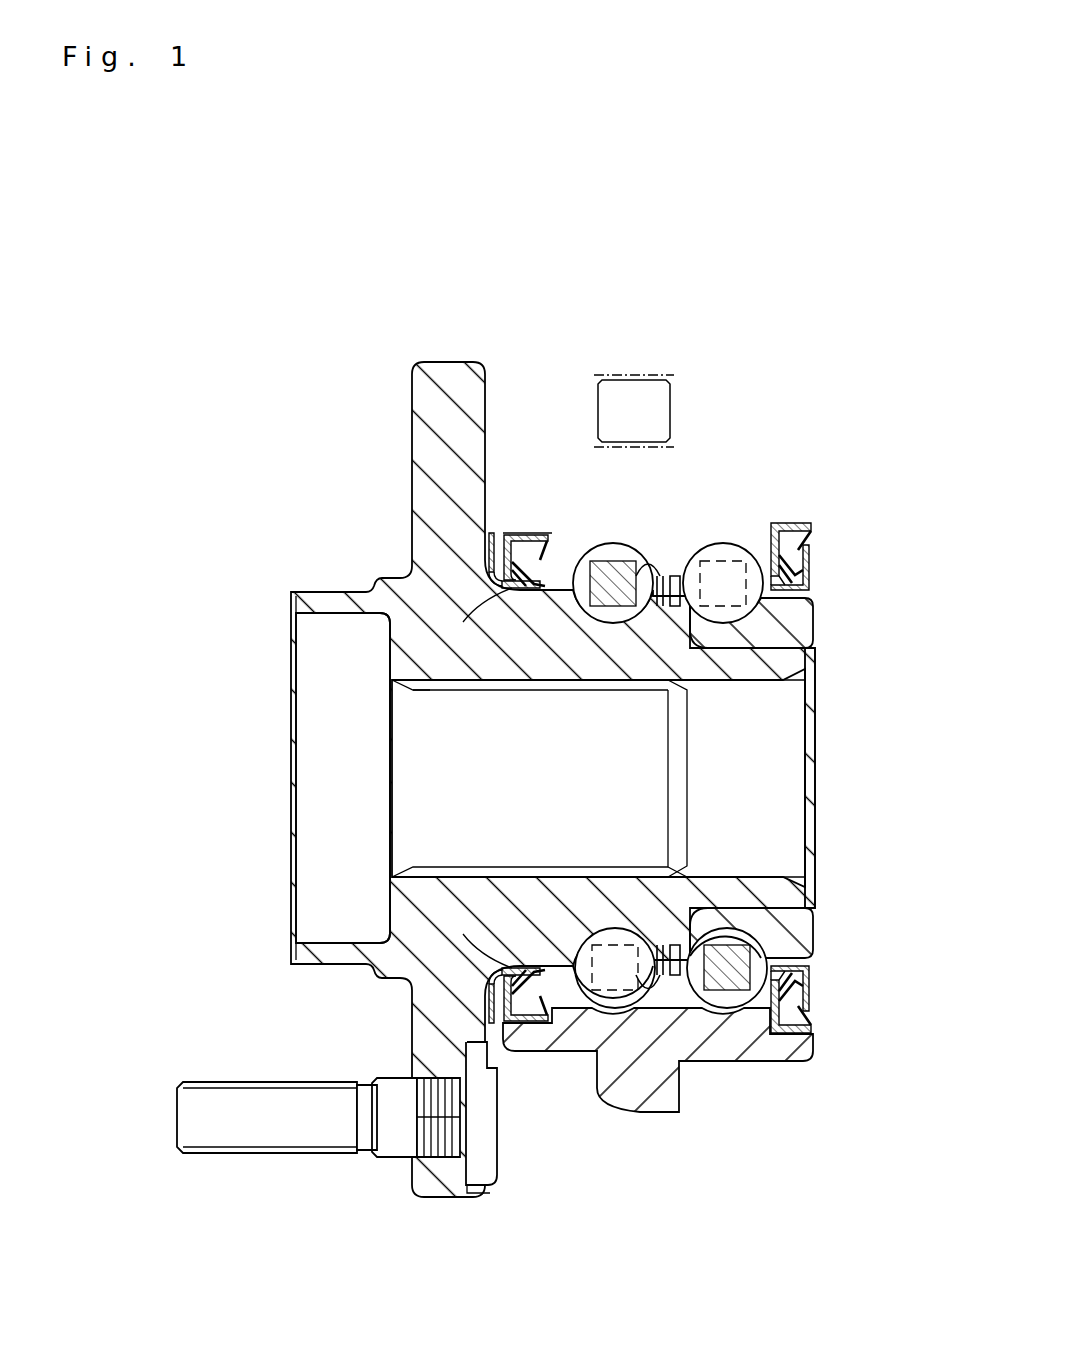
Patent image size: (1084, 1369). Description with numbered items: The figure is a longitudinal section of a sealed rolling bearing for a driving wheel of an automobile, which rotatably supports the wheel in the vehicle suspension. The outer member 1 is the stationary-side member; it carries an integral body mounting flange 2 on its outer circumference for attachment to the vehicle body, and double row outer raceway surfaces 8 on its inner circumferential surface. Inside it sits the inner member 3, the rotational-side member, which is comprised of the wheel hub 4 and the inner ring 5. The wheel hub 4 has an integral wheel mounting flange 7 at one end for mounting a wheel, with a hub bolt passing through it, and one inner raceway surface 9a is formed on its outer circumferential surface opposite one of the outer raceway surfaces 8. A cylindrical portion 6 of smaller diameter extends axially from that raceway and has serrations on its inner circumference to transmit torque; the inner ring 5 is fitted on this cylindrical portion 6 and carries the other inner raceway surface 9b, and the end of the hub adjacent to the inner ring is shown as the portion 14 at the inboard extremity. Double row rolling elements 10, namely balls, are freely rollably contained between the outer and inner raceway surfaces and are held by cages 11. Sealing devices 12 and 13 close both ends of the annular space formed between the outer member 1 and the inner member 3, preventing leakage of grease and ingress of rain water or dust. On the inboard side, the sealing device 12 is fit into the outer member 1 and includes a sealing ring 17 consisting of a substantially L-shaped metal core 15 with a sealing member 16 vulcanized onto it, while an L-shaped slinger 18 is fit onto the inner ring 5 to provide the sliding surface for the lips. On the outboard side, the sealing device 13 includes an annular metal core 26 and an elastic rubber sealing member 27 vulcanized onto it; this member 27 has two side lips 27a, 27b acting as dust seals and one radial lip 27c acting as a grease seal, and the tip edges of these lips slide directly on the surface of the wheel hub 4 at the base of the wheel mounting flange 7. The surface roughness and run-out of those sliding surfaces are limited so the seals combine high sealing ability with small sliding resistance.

The outer member 1 is at (744, 505).
The body mounting flange 2 is at (636, 375).
The inner member 3 is at (421, 654).
The wheel hub 4 is at (400, 912).
The inner ring 5 is at (755, 660).
The cylindrical portion 6 is at (465, 856).
The wheel mounting flange 7 is at (447, 1199).
The outer raceway surface 8 is at (705, 1006).
The inner raceway surface 9a is at (602, 622).
The inner raceway surface 9b is at (717, 612).
The rolling elements 10 is at (762, 966).
The cage 11 is at (720, 948).
The sealing device 12 is at (849, 728).
The sealing device 13 is at (500, 535).
The caulked portion 14 is at (810, 650).
The metal core 15 is at (780, 530).
The sealing member 16 is at (816, 562).
The sealing ring 17 is at (822, 522).
The slinger 18 is at (810, 592).
The metal core 26 is at (536, 532).
The sealing member 27 is at (338, 759).
The side lip 27a is at (492, 548).
The side lip 27b is at (520, 570).
The radial lip 27c is at (532, 592).